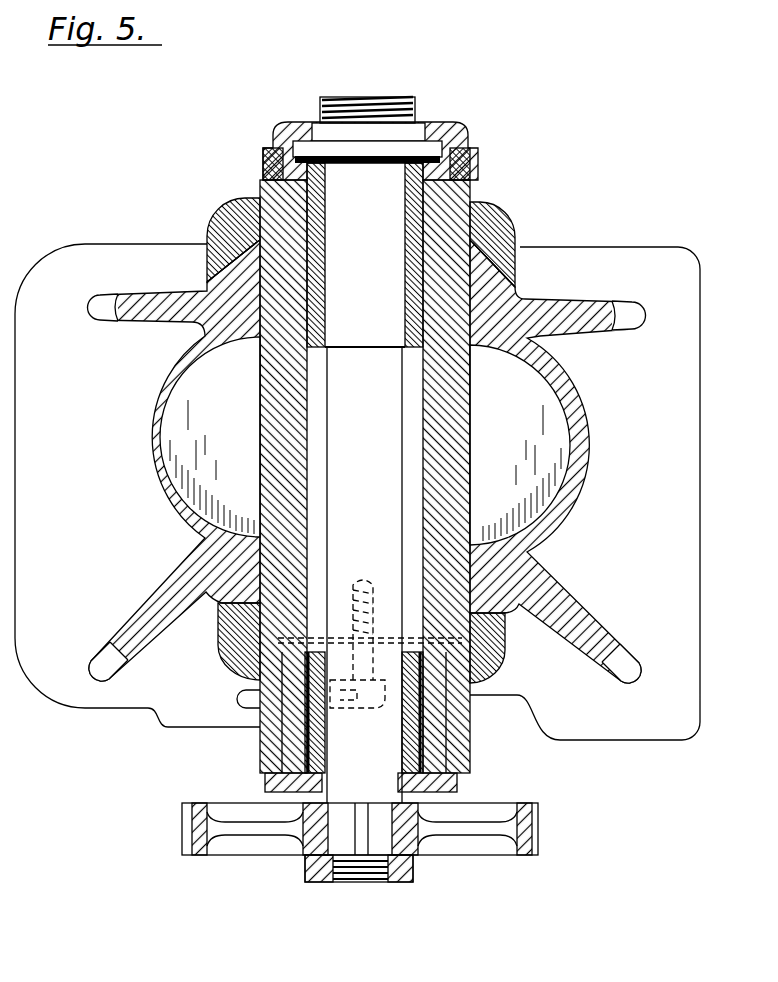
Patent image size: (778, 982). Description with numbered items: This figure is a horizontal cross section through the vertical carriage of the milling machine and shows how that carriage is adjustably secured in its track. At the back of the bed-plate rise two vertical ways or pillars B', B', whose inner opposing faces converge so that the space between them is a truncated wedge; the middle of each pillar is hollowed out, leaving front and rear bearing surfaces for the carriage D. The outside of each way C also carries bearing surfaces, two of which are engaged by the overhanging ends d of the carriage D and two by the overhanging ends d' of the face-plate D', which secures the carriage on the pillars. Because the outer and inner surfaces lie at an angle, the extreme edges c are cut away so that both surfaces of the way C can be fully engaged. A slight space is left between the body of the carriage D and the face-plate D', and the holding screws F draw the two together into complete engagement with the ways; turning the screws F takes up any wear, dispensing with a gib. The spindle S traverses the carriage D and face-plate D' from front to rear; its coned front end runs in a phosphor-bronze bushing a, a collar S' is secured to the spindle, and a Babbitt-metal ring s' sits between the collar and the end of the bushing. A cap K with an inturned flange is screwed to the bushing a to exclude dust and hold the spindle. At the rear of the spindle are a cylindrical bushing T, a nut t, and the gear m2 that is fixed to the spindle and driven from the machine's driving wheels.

The cap K is at (437, 138).
The ring s' is at (394, 133).
The bushing a is at (470, 157).
The cut-away edges c is at (252, 200).
The carriage D is at (233, 228).
The overhanging ends d is at (347, 240).
The way C is at (367, 461).
The pillars B' is at (365, 441).
The spindle S is at (364, 575).
The collar S' is at (365, 247).
The overhanging ends d' is at (353, 648).
The face-plate D' is at (224, 641).
The holding screws F is at (371, 712).
The cylindrical bushing T is at (417, 722).
The nut t is at (457, 787).
The gear m2 is at (254, 857).